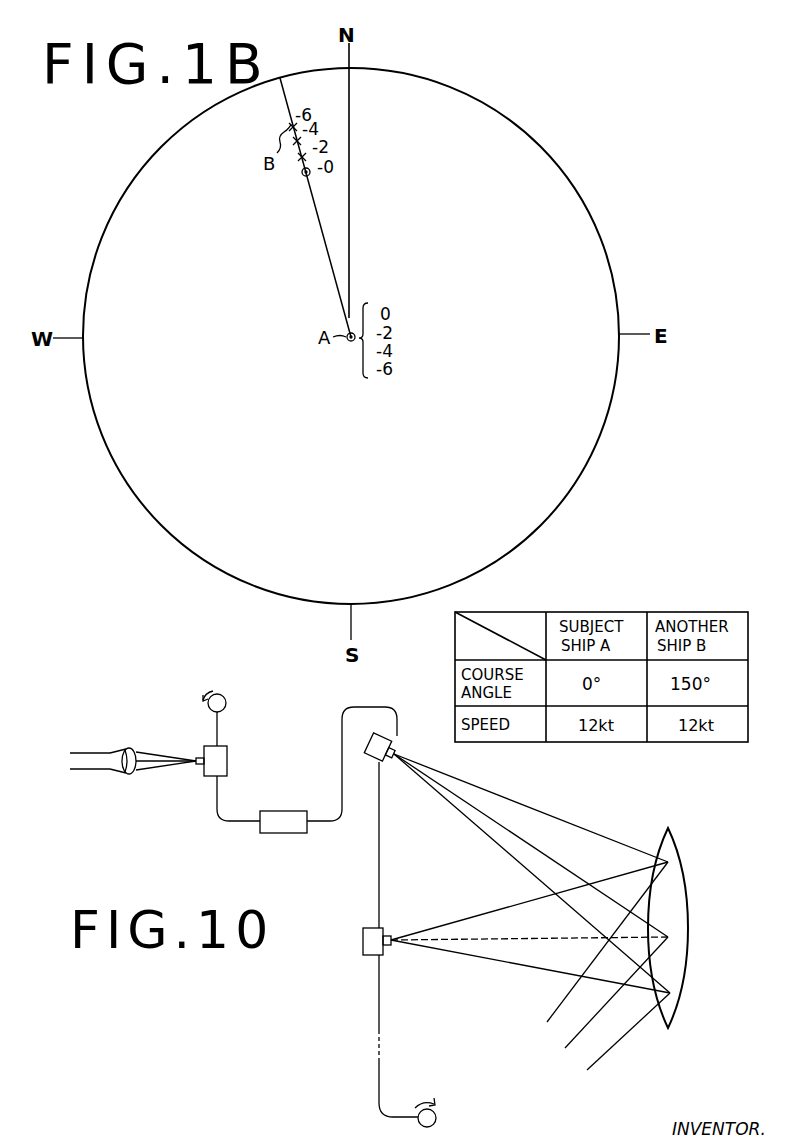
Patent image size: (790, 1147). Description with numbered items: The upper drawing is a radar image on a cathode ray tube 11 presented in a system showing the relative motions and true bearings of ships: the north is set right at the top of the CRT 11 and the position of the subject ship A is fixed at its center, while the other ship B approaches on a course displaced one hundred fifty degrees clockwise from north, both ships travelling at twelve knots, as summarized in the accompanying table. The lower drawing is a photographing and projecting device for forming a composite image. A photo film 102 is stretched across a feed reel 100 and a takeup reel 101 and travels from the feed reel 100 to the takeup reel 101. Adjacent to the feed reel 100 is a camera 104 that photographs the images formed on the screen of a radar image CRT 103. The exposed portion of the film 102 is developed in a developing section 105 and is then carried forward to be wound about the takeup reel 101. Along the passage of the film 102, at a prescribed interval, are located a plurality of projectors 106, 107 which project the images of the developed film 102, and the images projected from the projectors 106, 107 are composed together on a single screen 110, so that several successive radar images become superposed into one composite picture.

In FIG. 1B, the cathode ray tube 11 is at (562, 165).
In FIG. 10, the feed reel 100 is at (227, 700).
In FIG. 10, the takeup reel 101 is at (437, 1118).
In FIG. 10, the photo film 102 is at (232, 821).
In FIG. 10, the radar image CRT 103 is at (85, 770).
In FIG. 10, the camera 104 is at (227, 763).
In FIG. 10, the developing section 105 is at (292, 833).
In FIG. 10, the projector 106 is at (384, 763).
In FIG. 10, the projector 107 is at (367, 928).
In FIG. 10, the screen 110 is at (689, 896).